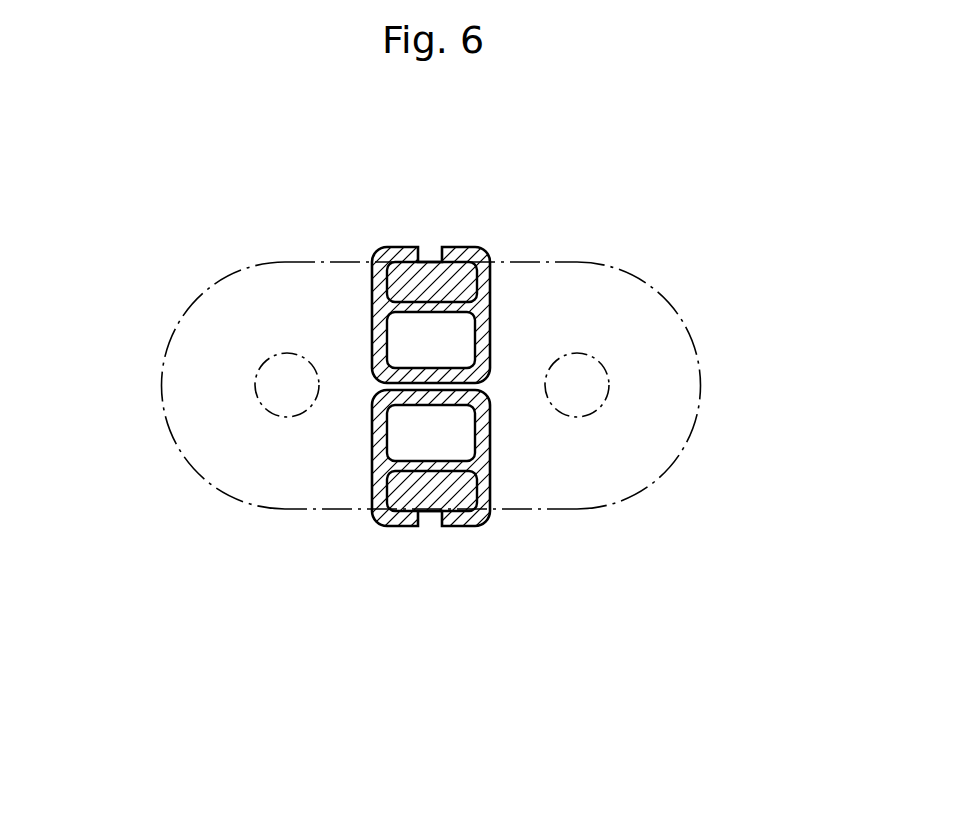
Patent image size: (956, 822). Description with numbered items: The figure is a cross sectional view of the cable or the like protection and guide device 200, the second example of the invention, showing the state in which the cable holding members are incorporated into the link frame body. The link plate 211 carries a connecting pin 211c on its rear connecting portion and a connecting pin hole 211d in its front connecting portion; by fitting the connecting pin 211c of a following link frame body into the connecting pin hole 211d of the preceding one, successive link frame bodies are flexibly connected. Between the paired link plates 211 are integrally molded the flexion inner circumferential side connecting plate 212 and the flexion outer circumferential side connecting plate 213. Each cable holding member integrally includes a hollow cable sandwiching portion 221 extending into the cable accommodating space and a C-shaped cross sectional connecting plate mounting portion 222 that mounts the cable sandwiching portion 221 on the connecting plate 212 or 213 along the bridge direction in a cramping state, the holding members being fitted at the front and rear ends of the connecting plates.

The cable or the like protection and guide device 200 is at (678, 267).
The link plate 211 is at (250, 267).
The connecting pin 211c is at (609, 385).
The connecting pin hole 211d is at (255, 384).
The flexion inner circumferential side connecting plate 212 is at (488, 510).
The flexion outer circumferential side connecting plate 213 is at (475, 282).
The cable sandwiching portion 221 is at (372, 328).
The connecting plate mounting portion 222 is at (473, 280).